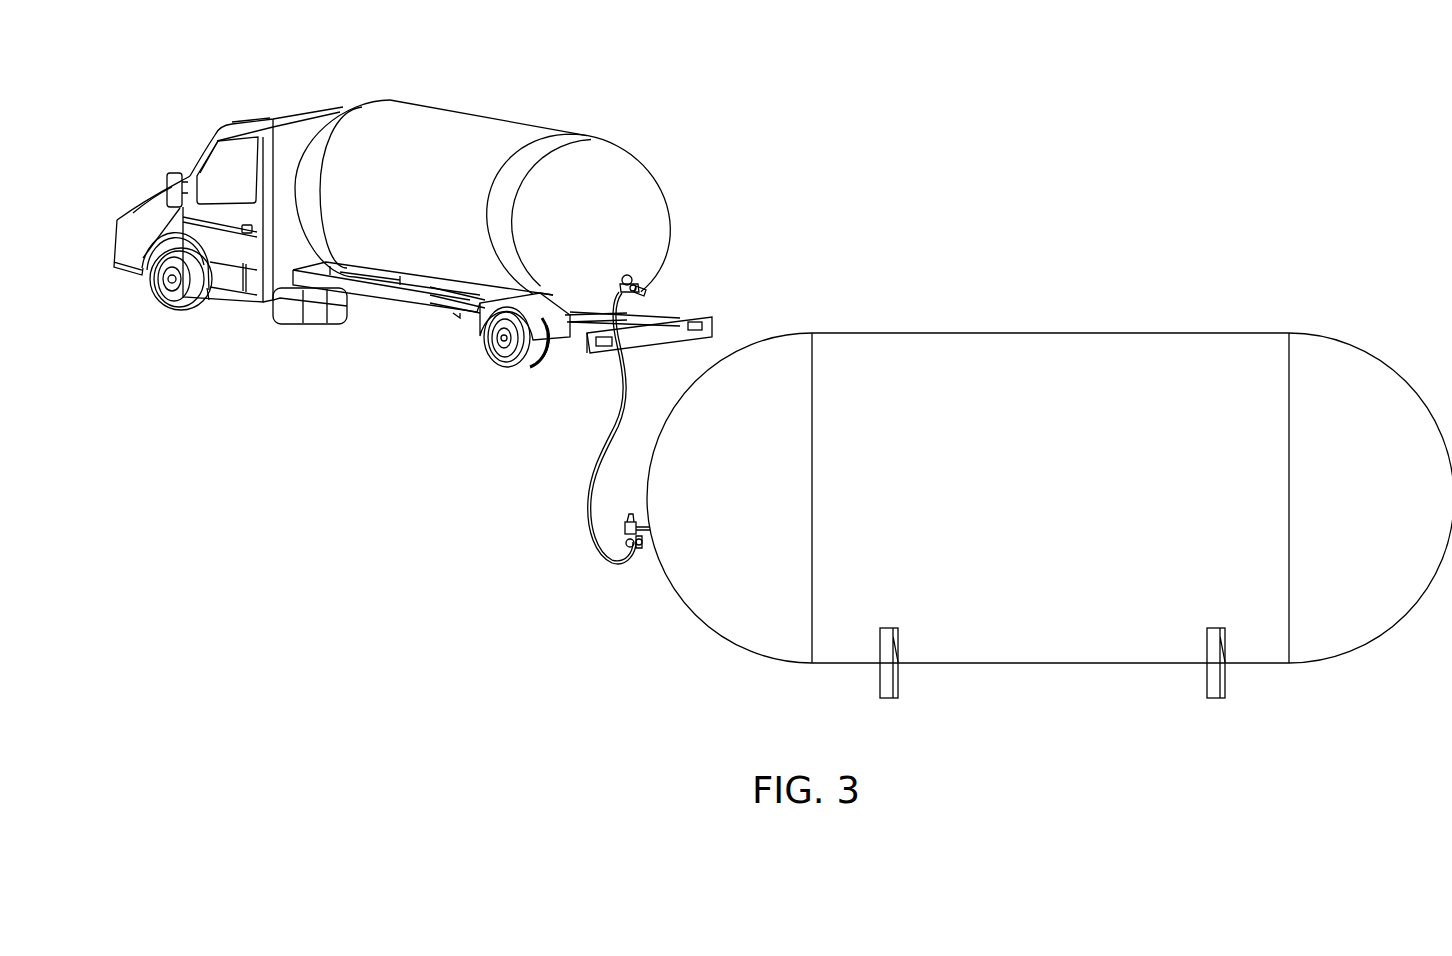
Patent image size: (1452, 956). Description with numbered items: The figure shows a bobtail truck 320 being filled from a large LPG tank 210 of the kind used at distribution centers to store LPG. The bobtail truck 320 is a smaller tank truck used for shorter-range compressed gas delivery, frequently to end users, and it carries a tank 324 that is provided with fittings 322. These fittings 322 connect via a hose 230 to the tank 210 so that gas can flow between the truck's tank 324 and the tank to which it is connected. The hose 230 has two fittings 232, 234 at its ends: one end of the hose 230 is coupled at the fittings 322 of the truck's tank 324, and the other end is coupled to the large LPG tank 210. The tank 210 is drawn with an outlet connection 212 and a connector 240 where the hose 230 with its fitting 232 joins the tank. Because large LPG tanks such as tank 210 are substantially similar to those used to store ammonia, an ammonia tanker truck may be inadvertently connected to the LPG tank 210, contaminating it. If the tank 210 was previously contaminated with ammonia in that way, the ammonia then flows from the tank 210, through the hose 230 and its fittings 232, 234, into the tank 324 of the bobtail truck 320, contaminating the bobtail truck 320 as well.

The bobtail truck 320 is at (528, 122).
The tank 324 is at (600, 227).
The fittings 322 is at (634, 280).
The fitting 234 is at (641, 288).
The hose 230 is at (598, 448).
The storage tank fill valve 212 is at (632, 522).
The hose nozzle connector 240 is at (627, 546).
The fitting 232 is at (640, 546).
The LPG tank 210 is at (933, 431).